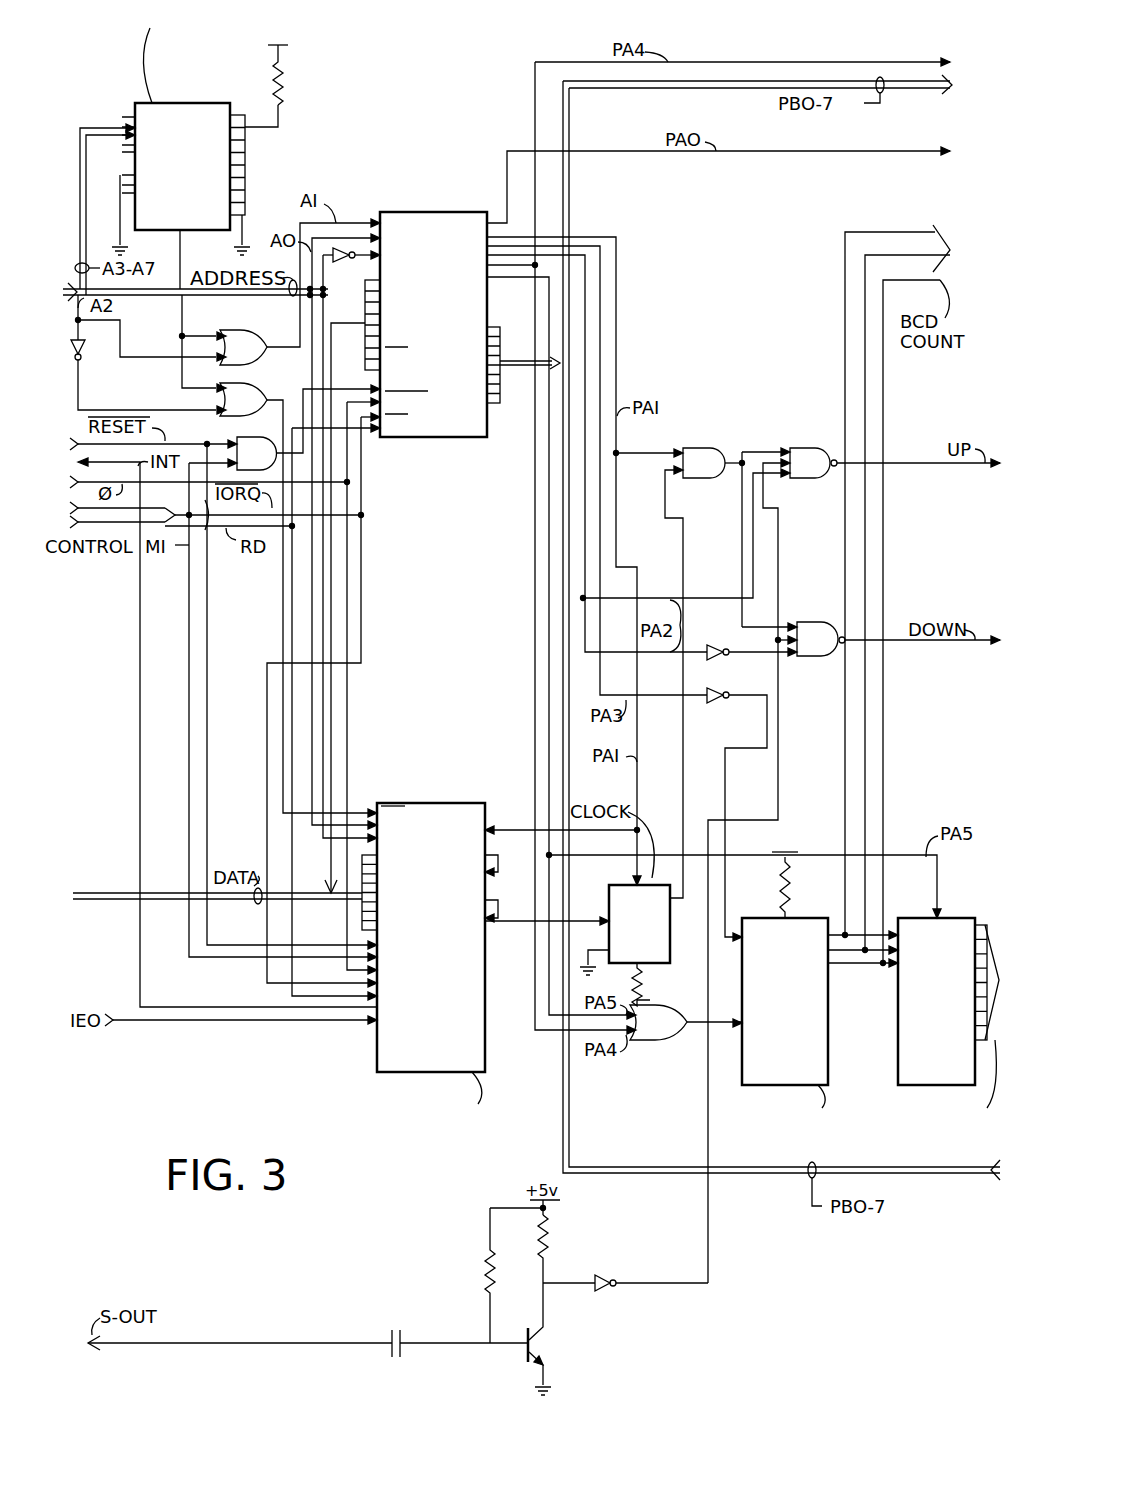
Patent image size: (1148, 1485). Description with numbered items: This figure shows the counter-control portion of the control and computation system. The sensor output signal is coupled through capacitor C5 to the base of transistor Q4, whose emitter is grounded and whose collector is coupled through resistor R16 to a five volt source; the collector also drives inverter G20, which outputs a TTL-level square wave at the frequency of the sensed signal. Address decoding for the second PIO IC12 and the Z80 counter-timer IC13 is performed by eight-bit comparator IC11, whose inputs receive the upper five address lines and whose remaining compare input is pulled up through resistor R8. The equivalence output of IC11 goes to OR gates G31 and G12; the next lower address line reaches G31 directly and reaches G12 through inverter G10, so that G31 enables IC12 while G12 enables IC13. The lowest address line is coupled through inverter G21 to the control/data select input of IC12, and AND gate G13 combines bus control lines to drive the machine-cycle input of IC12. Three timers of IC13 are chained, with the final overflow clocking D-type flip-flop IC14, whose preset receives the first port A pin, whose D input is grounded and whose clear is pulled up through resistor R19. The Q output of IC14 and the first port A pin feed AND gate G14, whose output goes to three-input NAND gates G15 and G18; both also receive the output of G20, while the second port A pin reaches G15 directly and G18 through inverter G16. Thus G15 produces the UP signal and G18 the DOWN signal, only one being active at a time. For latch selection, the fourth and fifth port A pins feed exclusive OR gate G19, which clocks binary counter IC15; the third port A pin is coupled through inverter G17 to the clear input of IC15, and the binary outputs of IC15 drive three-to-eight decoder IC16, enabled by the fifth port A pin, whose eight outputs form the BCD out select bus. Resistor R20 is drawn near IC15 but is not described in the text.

The 8-bit comparator IC11 is at (208, 103).
The second PIO IC12 is at (480, 420).
The Z80 CTC counter-timer IC13 is at (462, 1040).
The D-type flip-flop IC14 is at (634, 885).
The binary counter IC15 is at (808, 1066).
The 3-to-8 decoder IC16 is at (965, 1066).
The inverter G10 is at (82, 362).
The OR gate G12 is at (293, 598).
The AND gate G13 is at (300, 429).
The AND gate G14 is at (701, 537).
The 3-input NAND gate G15 is at (791, 865).
The inverter G16 is at (722, 646).
The inverter G17 is at (722, 690).
The 3-input NAND gate G18 is at (888, 639).
The exclusive OR gate G19 is at (684, 1022).
The inverter G20 is at (604, 1276).
The inverter G21 is at (355, 260).
The OR gate G31 is at (294, 294).
The pull-up resistor R8 is at (284, 86).
The resistor R16 is at (546, 1242).
The pull-up resistor R19 is at (634, 988).
The resistor R20 is at (792, 886).
The capacitor C5 is at (396, 1330).
The transistor Q4 is at (548, 1333).